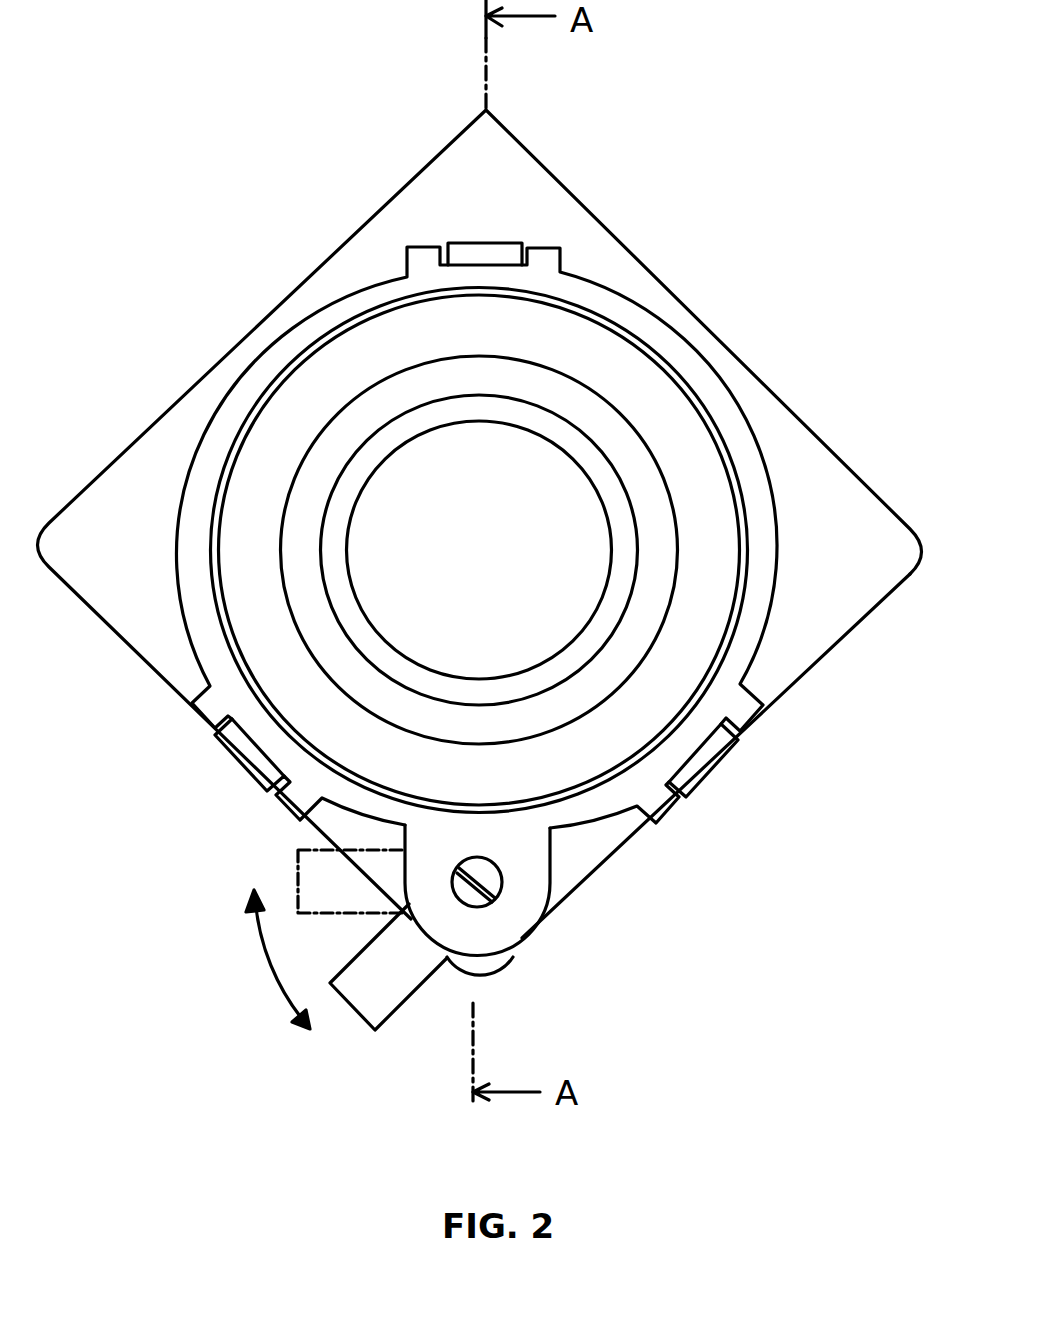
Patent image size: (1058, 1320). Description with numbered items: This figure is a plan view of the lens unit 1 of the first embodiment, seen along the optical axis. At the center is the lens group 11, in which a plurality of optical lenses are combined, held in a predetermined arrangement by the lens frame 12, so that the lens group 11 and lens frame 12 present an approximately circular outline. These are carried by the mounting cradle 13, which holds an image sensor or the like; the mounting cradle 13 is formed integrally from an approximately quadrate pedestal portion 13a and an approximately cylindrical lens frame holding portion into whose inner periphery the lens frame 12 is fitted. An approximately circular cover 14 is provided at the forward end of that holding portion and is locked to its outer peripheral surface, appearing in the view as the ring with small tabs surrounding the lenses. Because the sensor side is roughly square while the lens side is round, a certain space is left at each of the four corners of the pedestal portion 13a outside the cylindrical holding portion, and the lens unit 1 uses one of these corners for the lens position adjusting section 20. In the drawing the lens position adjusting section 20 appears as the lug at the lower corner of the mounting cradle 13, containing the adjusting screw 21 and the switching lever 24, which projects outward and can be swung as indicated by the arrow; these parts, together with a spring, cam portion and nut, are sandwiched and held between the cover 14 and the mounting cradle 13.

The lens unit 1 is at (658, 201).
The lens group 11 is at (498, 563).
The lens frame 12 is at (685, 455).
The mounting cradle 13 is at (812, 617).
The pedestal portion 13a is at (793, 640).
The cover 14 is at (687, 367).
The lens position adjusting section 20 is at (572, 907).
The adjusting screw 21 is at (472, 897).
The switching lever 24 is at (393, 997).